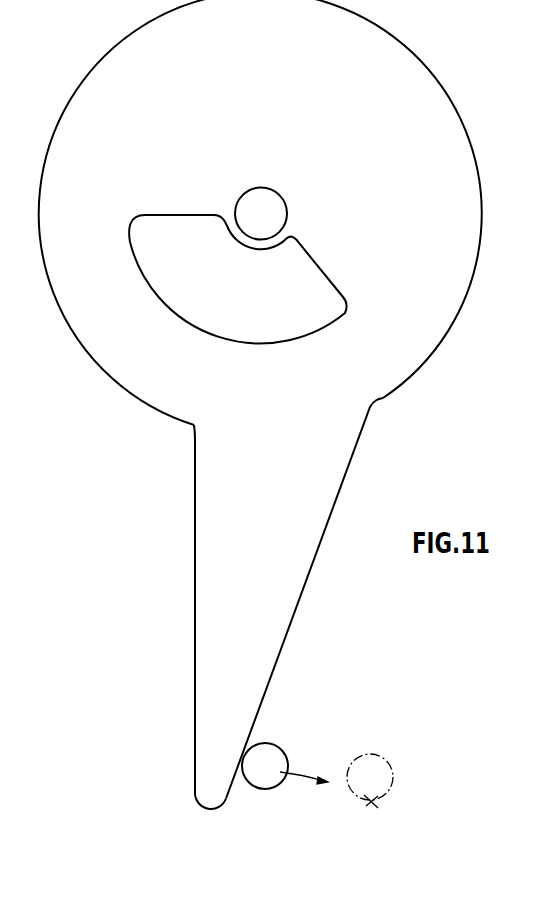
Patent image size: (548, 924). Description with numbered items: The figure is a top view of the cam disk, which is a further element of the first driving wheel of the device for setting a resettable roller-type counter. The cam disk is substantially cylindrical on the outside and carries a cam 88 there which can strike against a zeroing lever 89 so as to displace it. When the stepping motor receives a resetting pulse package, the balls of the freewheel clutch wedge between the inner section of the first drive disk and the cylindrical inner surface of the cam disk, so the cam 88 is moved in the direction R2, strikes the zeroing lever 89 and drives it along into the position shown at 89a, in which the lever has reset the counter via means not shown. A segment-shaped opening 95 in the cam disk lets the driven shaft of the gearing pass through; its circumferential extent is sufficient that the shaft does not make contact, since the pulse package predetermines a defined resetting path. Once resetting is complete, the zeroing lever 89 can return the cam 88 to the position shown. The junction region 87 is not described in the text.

The segment-shaped opening 95 is at (198, 313).
The shoulder 87 is at (218, 402).
The cam 88 is at (214, 561).
The zeroing lever 89 is at (264, 780).
The zeroing lever displaced position 89a is at (381, 817).
The resetting direction of rotation R2 is at (267, 636).